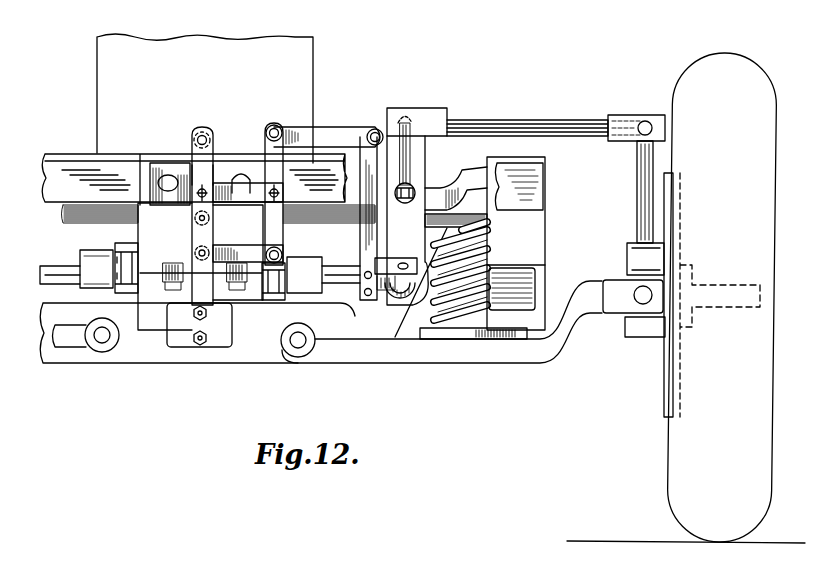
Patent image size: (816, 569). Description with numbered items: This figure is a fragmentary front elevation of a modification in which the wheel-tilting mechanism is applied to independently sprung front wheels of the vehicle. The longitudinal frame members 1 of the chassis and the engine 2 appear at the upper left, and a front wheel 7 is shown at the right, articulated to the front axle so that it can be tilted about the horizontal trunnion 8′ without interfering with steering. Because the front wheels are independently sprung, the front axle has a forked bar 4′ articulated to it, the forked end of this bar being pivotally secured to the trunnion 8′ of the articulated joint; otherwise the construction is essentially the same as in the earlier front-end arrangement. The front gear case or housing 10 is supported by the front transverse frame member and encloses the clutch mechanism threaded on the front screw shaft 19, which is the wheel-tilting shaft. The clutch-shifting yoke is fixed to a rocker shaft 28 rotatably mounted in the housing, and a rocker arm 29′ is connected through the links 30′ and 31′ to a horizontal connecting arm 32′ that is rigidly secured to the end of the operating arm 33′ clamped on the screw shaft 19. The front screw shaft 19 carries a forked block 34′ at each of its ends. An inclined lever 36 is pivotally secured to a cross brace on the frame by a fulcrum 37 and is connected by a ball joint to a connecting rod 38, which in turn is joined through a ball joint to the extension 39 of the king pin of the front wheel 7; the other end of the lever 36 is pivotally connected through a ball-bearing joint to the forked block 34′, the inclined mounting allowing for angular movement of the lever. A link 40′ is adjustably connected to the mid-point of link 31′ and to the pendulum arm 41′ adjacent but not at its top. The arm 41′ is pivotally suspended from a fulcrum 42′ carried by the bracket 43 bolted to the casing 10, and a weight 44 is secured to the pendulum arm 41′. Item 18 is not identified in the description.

The longitudinal frame members 1 is at (528, 236).
The engine 2 is at (300, 58).
The forked bar 4′ is at (63, 343).
The front wheels 7 is at (702, 80).
The horizontal trunnion 8′ is at (638, 302).
The front gear case or housing 10 is at (152, 317).
The block 18 is at (95, 256).
The screw shaft 19 is at (80, 278).
The rocker shaft 28 is at (194, 218).
The rocker arm 29′ is at (194, 240).
The link 30′ is at (235, 253).
The link 31′ is at (270, 153).
The horizontal connecting arm 32′ is at (327, 133).
The operating arm 33′ is at (370, 168).
The forked block 34′ is at (383, 292).
The inclined lever 36 is at (417, 270).
The fulcrum 37 is at (412, 185).
The connecting rod 38 is at (514, 120).
The king pin extension 39 is at (639, 184).
The link 40′ is at (236, 192).
The pendulum arm 41′ is at (170, 185).
The fulcrum 42′ is at (203, 135).
The bracket 43 is at (200, 172).
The weight 44 is at (181, 338).